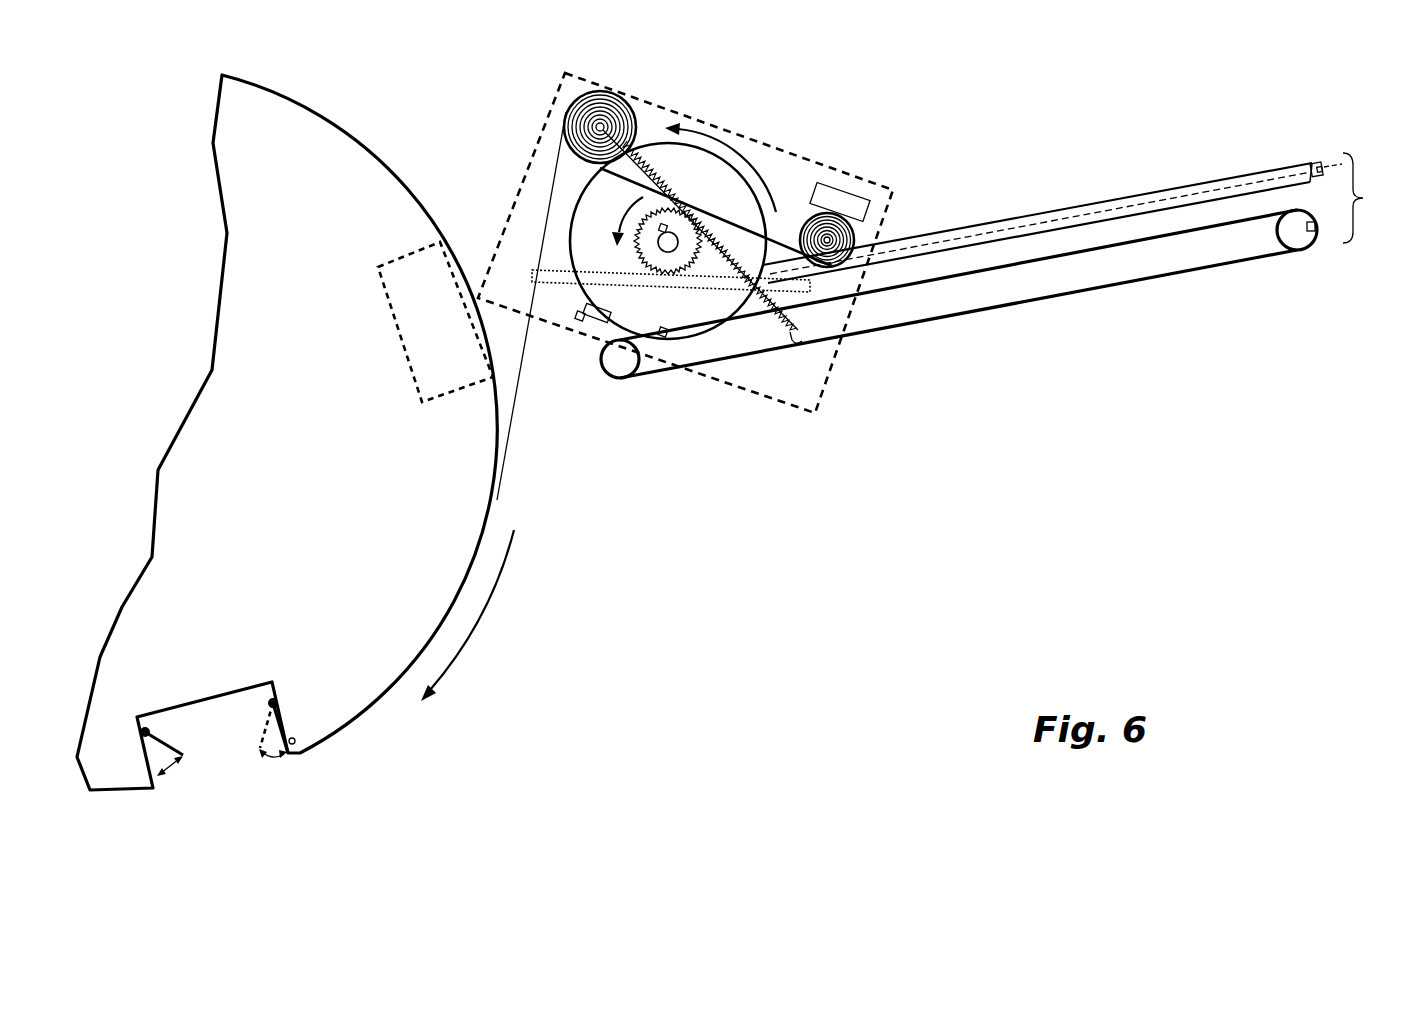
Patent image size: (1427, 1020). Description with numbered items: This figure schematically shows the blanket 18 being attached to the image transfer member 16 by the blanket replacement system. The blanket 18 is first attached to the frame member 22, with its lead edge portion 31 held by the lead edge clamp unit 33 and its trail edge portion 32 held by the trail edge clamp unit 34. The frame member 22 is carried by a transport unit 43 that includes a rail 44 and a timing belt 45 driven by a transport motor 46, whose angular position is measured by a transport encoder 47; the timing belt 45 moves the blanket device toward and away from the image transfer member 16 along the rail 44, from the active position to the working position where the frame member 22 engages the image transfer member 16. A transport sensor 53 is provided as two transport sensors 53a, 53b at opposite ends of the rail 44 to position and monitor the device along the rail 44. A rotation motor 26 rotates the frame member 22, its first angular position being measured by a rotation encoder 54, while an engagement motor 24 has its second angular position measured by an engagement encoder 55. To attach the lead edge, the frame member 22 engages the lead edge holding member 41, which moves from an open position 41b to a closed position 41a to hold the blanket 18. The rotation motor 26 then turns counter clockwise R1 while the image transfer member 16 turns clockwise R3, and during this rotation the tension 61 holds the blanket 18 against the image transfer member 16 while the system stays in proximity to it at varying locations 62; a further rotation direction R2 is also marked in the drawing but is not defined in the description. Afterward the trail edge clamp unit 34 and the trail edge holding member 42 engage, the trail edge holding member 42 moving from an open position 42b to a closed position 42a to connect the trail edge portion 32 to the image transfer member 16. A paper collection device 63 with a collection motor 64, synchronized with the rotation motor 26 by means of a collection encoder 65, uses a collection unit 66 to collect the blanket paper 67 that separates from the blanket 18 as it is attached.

The image transfer member 16 is at (350, 383).
The blanket 18 is at (570, 98).
The frame member 22 is at (727, 262).
The engagement motor 24 is at (690, 197).
The rotation motor 26 is at (693, 318).
The lead edge portion 31 is at (296, 742).
The trail edge portion 32 is at (581, 101).
The lead edge clamp unit 33 is at (792, 338).
The trail edge clamp unit 34 is at (590, 122).
The lead edge holding member 41 is at (253, 721).
The closed position 41a is at (290, 756).
The open position 41b is at (258, 741).
The trail edge holding member 42 is at (167, 737).
The closed position 42a is at (157, 787).
The open position 42b is at (188, 757).
The transport unit 43 is at (1363, 198).
The rail 44 is at (1089, 206).
The timing belt 45 is at (1158, 277).
The transport motor 46 is at (1297, 240).
The transport encoder 47 is at (1317, 229).
The transport sensor 53 is at (583, 326).
The transport sensor 53a is at (1323, 163).
The transport sensor 53b is at (580, 325).
The rotation encoder 54 is at (656, 339).
The engagement encoder 55 is at (666, 224).
The tension 61 is at (514, 407).
The varying locations 62 is at (408, 305).
The paper collection device 63 is at (864, 191).
The collection motor 64 is at (847, 175).
The collection encoder 65 is at (810, 217).
The collection unit 66 is at (856, 228).
The blanket paper 67 is at (838, 268).
The counter clockwise direction R1 is at (777, 143).
The rotation direction of gear R2 is at (617, 195).
The clockwise direction R3 is at (497, 600).